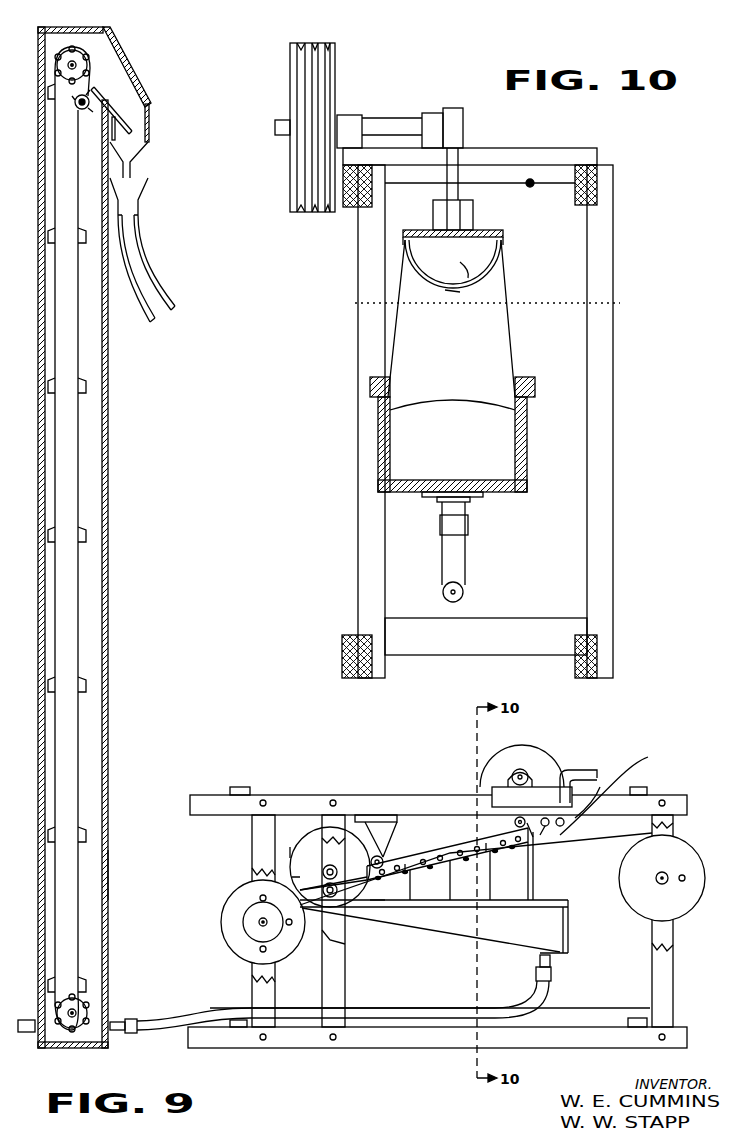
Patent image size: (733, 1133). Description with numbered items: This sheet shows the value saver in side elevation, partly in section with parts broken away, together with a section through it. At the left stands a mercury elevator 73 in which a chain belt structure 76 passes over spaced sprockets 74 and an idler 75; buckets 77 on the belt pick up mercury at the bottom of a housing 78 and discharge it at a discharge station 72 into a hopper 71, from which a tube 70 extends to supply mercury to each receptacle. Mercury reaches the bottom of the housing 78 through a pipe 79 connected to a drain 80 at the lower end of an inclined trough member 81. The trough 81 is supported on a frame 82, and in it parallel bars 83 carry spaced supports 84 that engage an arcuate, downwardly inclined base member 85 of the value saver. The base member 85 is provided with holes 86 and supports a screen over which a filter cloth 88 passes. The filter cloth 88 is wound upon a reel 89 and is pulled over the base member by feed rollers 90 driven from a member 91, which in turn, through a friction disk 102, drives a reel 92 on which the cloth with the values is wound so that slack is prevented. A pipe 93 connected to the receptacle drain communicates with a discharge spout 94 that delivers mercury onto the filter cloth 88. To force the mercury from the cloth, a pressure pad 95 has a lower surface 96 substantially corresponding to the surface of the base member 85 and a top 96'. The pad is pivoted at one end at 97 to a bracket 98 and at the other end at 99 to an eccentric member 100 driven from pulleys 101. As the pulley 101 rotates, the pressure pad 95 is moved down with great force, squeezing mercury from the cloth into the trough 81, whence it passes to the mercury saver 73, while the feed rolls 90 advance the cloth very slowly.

In FIG. 9, the tube 70 is at (152, 268).
In FIG. 9, the hopper 71 is at (140, 150).
In FIG. 9, the discharge station 72 is at (99, 90).
In FIG. 9, the mercury elevator 73 is at (112, 417).
In FIG. 9, the sprockets 74 is at (88, 60).
In FIG. 9, the idler 75 is at (90, 104).
In FIG. 9, the chain belt structure 76 is at (79, 372).
In FIG. 9, the buckets 77 is at (80, 688).
In FIG. 9, the housing 78 is at (109, 890).
In FIG. 9, the pipe 79 is at (180, 1012).
In FIG. 9, the drain 80 is at (552, 961).
In FIG. 9, the inclined trough member 81 is at (434, 920).
In FIG. 10, the inclined trough member 81 is at (527, 440).
In FIG. 10, the frame 82 is at (597, 438).
In FIG. 10, the parallel bars 83 is at (535, 394).
In FIG. 9, the supports 84 is at (532, 882).
In FIG. 10, the supports 84 is at (497, 324).
In FIG. 9, the base member 85 is at (400, 887).
In FIG. 10, the base member 85 is at (468, 269).
In FIG. 9, the holes 86 is at (377, 907).
In FIG. 10, the holes 86 is at (452, 294).
In FIG. 9, the filter cloth 88 is at (650, 831).
In FIG. 9, the reel 89 is at (684, 851).
In FIG. 9, the feed rollers 90 is at (343, 847).
In FIG. 9, the member 91 is at (307, 853).
In FIG. 9, the reel 92 is at (238, 892).
In FIG. 9, the pipe 93 is at (600, 787).
In FIG. 9, the discharge spout 94 is at (612, 790).
In FIG. 9, the pressure pad 95 is at (410, 868).
In FIG. 10, the pressure pad 95 is at (484, 273).
In FIG. 9, the lower surface 96 is at (469, 801).
In FIG. 10, the lower surface 96 is at (481, 237).
In FIG. 10, the top 96' is at (482, 223).
In FIG. 9, the pivot 97 is at (383, 860).
In FIG. 9, the bracket 98 is at (372, 830).
In FIG. 9, the pivot 99 is at (550, 775).
In FIG. 10, the eccentric member 100 is at (458, 195).
In FIG. 9, the pulleys 101 is at (564, 763).
In FIG. 10, the pulleys 101 is at (290, 168).
In FIG. 9, the friction disk 102 is at (290, 850).